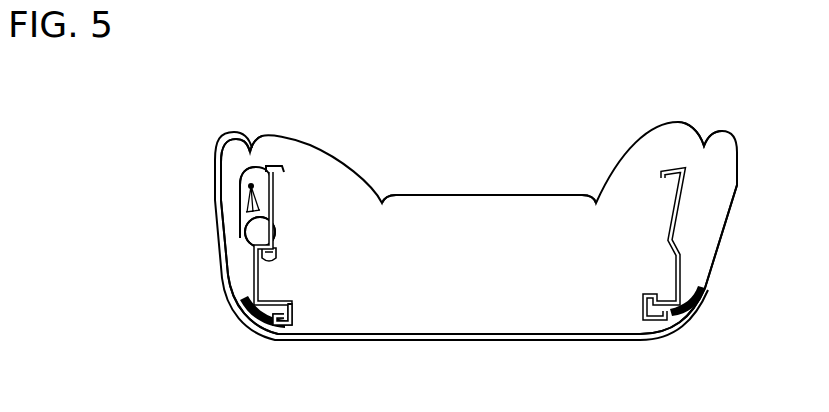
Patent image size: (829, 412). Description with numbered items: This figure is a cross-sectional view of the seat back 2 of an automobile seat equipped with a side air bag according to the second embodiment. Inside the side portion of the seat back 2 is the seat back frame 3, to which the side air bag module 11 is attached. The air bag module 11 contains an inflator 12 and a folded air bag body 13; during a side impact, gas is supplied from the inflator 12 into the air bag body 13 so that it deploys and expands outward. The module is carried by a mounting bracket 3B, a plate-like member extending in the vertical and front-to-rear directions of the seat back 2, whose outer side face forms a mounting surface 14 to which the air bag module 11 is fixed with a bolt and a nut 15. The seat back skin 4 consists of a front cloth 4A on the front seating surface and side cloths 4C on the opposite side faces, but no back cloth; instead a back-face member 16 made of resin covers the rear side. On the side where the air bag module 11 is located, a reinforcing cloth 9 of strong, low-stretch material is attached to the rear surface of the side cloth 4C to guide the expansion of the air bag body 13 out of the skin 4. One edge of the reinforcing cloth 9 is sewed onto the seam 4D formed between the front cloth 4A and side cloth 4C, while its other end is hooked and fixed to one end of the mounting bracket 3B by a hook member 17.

The seat back 2 is at (571, 182).
The seat back frame 3 is at (273, 202).
The mounting bracket 3B is at (254, 272).
The seat back skin 4 is at (507, 192).
The front cloth 4A is at (453, 194).
The side cloth 4C is at (214, 223).
The seam 4D is at (250, 148).
The reinforcing cloth 9 is at (212, 193).
The side air bag module 11 is at (236, 176).
The inflator 12 is at (255, 234).
The air bag body 13 is at (252, 186).
The mounting surface 14 is at (263, 233).
The nut 15 is at (274, 257).
The back-face member 16 is at (465, 341).
The hook member 17 is at (296, 306).